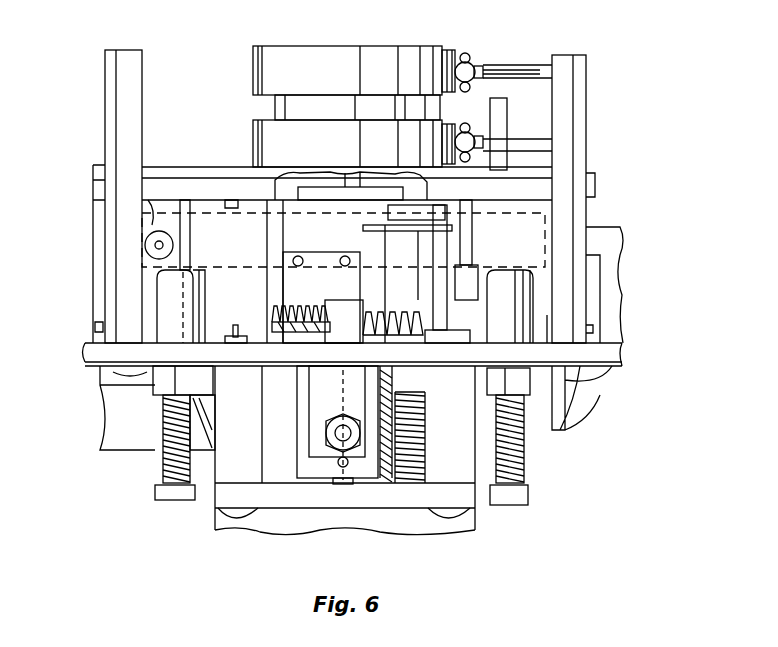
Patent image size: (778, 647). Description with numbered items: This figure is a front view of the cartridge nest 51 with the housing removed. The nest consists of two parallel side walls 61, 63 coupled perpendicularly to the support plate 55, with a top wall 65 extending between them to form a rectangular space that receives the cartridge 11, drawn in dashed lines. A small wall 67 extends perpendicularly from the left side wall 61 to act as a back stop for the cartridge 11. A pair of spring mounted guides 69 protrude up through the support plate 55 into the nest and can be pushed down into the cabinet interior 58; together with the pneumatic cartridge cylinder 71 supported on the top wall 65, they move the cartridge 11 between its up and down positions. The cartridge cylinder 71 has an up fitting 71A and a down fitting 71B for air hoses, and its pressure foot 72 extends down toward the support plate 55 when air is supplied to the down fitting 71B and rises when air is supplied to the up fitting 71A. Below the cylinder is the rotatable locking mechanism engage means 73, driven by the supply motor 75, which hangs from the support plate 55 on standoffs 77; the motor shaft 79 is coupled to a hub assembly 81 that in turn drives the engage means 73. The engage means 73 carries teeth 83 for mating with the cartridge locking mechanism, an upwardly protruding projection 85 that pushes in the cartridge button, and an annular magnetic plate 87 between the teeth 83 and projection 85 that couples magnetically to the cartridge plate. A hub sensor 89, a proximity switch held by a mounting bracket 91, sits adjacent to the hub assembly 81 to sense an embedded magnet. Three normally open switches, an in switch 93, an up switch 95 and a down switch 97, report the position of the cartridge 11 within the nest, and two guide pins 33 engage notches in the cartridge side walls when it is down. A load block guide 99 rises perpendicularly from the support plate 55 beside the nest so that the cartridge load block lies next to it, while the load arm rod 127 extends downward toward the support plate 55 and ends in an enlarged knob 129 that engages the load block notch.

The cartridge 11 is at (148, 226).
The guide pins 33 is at (140, 316).
The cartridge nest 51 is at (598, 63).
The support plate 55 is at (85, 350).
The cabinet interior 58 is at (575, 400).
The left side wall 61 is at (105, 62).
The right side wall 63 is at (580, 100).
The top wall 65 is at (528, 170).
The small wall 67 is at (150, 205).
The spring mounted guides 69 is at (165, 290).
The cartridge cylinder 71 is at (355, 55).
The up fitting 71A is at (467, 137).
The down fitting 71B is at (468, 62).
The pressure foot 72 is at (285, 175).
The locking mechanism engage means 73 is at (290, 278).
The supply motor 75 is at (255, 520).
The standoffs 77 is at (470, 480).
The shaft 79 is at (335, 484).
The hub assembly 81 is at (303, 412).
The teeth 83 is at (280, 306).
The projection 85 is at (355, 300).
The annular magnetic plate 87 is at (285, 322).
The hub sensor 89 is at (328, 435).
The mounting bracket 91 is at (318, 387).
The in switch 93 is at (148, 242).
The up switch 95 is at (240, 205).
The down switch 97 is at (200, 327).
The load block guide 99 is at (600, 265).
The load arm rod 127 is at (530, 218).
The knob 129 is at (470, 276).